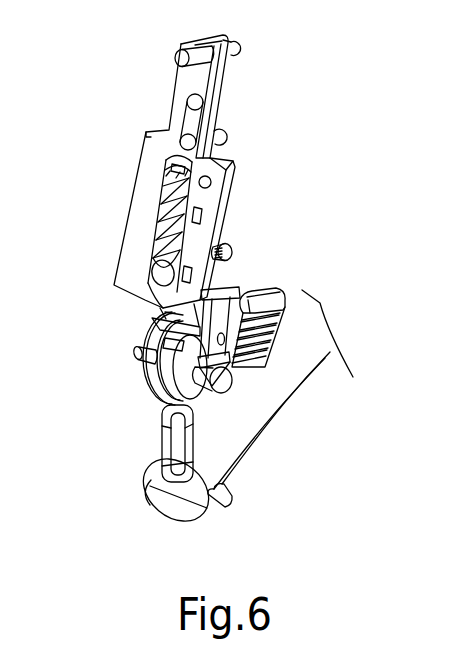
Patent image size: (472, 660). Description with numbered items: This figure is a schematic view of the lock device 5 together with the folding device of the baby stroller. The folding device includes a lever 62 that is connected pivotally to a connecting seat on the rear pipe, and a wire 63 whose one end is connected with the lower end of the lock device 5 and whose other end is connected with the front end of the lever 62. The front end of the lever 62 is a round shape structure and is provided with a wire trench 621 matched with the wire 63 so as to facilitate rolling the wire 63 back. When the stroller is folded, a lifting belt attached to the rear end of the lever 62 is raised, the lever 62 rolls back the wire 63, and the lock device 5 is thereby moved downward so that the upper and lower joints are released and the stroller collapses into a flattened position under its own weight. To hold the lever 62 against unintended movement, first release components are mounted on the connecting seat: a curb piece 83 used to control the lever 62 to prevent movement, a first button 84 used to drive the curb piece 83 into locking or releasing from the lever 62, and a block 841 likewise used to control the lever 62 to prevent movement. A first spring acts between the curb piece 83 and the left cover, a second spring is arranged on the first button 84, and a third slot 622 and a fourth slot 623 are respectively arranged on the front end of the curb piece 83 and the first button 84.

The lock device 5 is at (131, 178).
The block 841 is at (164, 321).
The curb piece 83 is at (230, 289).
The first button 84 is at (280, 292).
The fourth slot 623 is at (165, 344).
The third slot 622 is at (146, 354).
The wire 63 is at (152, 362).
The wire trench 621 is at (150, 384).
The lever 62 is at (162, 424).